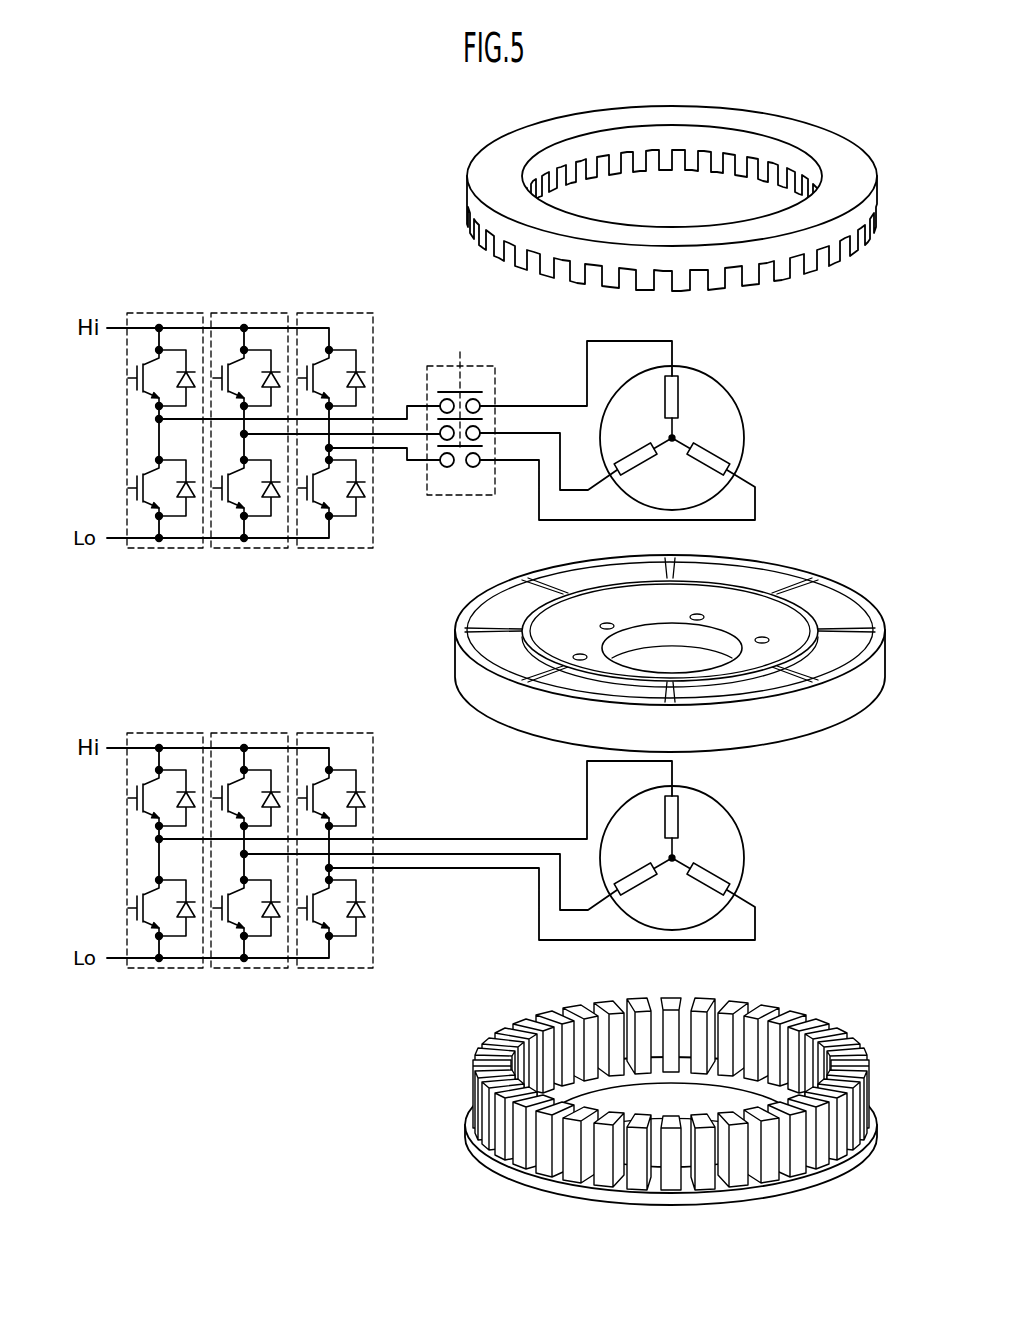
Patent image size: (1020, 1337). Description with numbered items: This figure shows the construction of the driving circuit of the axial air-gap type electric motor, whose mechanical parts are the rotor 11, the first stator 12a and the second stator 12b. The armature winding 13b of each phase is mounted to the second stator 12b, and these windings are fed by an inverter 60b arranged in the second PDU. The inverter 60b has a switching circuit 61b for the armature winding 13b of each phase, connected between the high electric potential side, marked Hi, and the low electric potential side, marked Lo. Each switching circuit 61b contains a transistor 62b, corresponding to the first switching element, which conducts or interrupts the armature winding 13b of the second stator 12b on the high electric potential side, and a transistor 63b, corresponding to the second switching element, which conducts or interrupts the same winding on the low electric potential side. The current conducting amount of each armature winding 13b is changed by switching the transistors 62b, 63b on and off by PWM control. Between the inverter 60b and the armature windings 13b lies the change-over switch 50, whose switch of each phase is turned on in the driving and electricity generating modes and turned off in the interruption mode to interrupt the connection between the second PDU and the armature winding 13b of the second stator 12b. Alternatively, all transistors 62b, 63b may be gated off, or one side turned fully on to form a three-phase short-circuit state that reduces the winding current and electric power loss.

The rotor 11 is at (820, 563).
The first stator 12a is at (815, 987).
The second stator 12b is at (773, 95).
The armature winding 13b is at (680, 390).
The change-over switch 50 is at (478, 362).
The inverter 60b is at (253, 300).
The switching circuit 61b is at (160, 310).
The transistor 62b is at (128, 380).
The transistor 63b is at (128, 488).